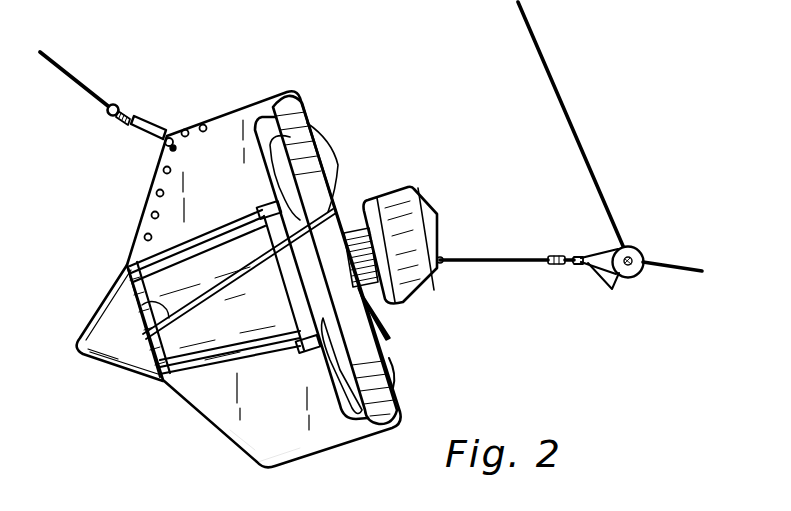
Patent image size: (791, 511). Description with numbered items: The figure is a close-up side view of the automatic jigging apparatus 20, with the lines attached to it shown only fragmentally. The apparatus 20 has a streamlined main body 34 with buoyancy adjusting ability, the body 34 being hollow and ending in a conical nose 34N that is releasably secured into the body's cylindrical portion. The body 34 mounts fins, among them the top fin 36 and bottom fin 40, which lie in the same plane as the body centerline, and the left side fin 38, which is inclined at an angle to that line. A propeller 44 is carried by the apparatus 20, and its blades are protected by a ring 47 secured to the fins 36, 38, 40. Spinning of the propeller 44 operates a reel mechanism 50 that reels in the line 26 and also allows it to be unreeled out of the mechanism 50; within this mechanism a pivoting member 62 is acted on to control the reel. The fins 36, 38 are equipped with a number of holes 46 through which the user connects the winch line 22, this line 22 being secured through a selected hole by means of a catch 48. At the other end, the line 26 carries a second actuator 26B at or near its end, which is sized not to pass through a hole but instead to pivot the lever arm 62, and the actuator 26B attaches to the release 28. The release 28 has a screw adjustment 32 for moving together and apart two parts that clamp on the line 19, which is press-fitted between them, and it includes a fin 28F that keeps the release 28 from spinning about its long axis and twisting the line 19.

The line 19 is at (583, 147).
The apparatus 20 is at (218, 436).
The winch line 22 is at (83, 85).
The line 26 is at (507, 263).
The second actuator 26B is at (557, 255).
The release 28 is at (602, 267).
The fin 28F is at (618, 277).
The screw adjustment 32 is at (630, 256).
The main body 34 is at (197, 337).
The conical nose 34N is at (120, 351).
The top fin 36 is at (223, 150).
The left side fin 38 is at (140, 300).
The bottom fin 40 is at (262, 428).
The propeller 44 is at (337, 162).
The holes 46 is at (178, 132).
The ring 47 is at (360, 353).
The catch 48 is at (142, 113).
The reel mechanism 50 is at (433, 200).
The pivoting member 62 is at (444, 257).